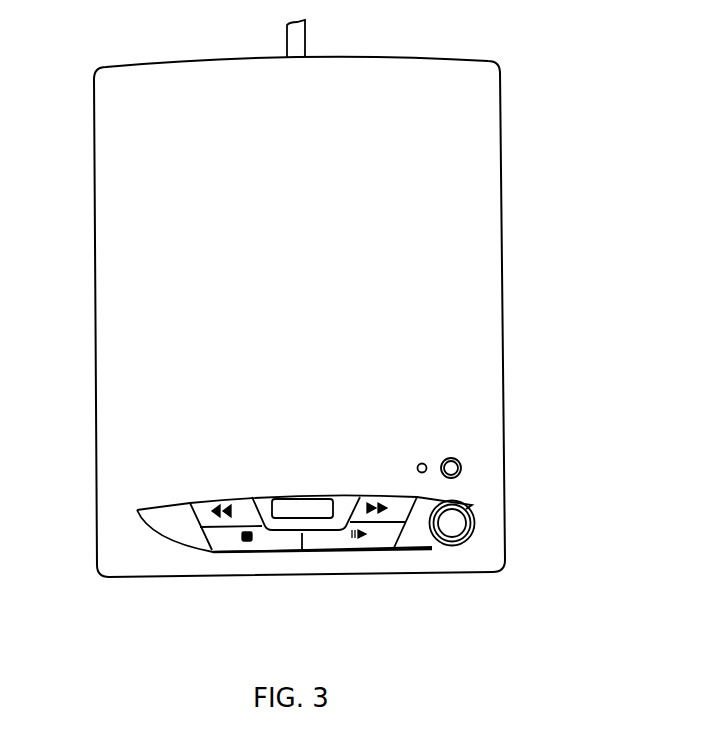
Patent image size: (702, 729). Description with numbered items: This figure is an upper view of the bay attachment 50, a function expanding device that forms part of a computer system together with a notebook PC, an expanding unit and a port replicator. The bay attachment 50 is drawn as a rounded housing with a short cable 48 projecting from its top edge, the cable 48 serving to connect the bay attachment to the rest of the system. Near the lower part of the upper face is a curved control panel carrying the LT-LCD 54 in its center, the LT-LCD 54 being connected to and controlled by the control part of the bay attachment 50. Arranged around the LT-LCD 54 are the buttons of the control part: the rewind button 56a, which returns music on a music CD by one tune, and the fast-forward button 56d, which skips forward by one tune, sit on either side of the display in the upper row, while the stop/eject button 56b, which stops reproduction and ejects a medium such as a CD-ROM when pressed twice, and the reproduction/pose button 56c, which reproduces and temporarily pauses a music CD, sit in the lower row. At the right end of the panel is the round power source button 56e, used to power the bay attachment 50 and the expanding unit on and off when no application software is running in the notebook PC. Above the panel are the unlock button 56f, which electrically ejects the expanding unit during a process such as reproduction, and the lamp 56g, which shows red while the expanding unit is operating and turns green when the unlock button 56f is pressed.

The cable 48 is at (298, 38).
The function expanding device (bay attachment) 50 is at (97, 292).
The LT-LCD 54 is at (297, 495).
The rewind (return by one tune) button 56a is at (206, 503).
The stop/eject button 56b is at (227, 537).
The reproduction/pose button 56c is at (378, 538).
The fast-forward (skip by one tune) button 56d is at (383, 496).
The power source button 56e is at (453, 536).
The unlock button 56f is at (452, 465).
The lamp 56g is at (422, 463).